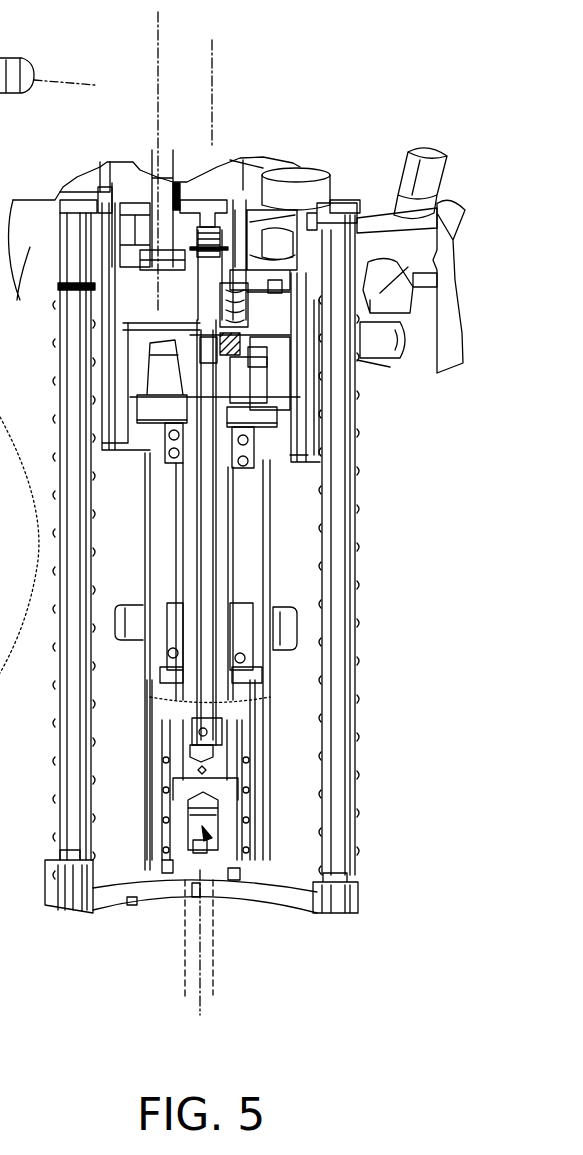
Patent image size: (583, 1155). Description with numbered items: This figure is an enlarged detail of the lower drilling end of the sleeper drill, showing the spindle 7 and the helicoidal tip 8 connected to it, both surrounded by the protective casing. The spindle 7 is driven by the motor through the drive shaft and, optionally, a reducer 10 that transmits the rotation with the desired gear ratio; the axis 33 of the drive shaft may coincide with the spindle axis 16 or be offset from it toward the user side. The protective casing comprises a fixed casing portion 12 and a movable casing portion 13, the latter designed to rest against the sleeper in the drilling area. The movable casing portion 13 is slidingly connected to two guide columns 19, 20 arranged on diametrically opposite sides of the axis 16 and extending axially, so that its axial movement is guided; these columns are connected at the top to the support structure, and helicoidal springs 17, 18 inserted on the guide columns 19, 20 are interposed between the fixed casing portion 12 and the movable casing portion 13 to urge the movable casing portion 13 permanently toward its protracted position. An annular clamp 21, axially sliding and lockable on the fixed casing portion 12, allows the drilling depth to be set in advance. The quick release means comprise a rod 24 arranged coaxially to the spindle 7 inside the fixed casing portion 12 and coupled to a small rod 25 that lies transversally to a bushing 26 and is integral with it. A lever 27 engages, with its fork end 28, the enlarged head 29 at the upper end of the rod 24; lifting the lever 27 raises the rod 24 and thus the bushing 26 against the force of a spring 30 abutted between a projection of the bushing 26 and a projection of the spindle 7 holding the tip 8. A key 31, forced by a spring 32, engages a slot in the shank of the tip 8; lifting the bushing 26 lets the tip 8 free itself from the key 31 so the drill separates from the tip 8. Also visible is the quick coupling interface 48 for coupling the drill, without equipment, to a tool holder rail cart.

The spindle 7 is at (232, 585).
The helicoidal tip 8 is at (200, 953).
The reducer 10 is at (175, 180).
The fixed casing portion 12 is at (268, 524).
The movable casing portion 13 is at (155, 760).
The spindle axis 16 is at (213, 132).
The helicoidal spring 17 is at (53, 767).
The helicoidal spring 18 is at (356, 621).
The guide column 19 is at (72, 685).
The guide column 20 is at (337, 668).
The annular clamp 21 is at (127, 618).
The rod 24 is at (207, 570).
The small rod 25 is at (205, 732).
The bushing 26 is at (248, 757).
The lever 27 is at (420, 165).
The fork end 28 is at (240, 380).
The enlarged head 29 is at (218, 352).
The spring 30 is at (238, 823).
The key 31 is at (262, 880).
The spring 32 is at (245, 787).
The axis of the drive shaft 33 is at (155, 68).
The quick coupling interface 48 is at (19, 436).